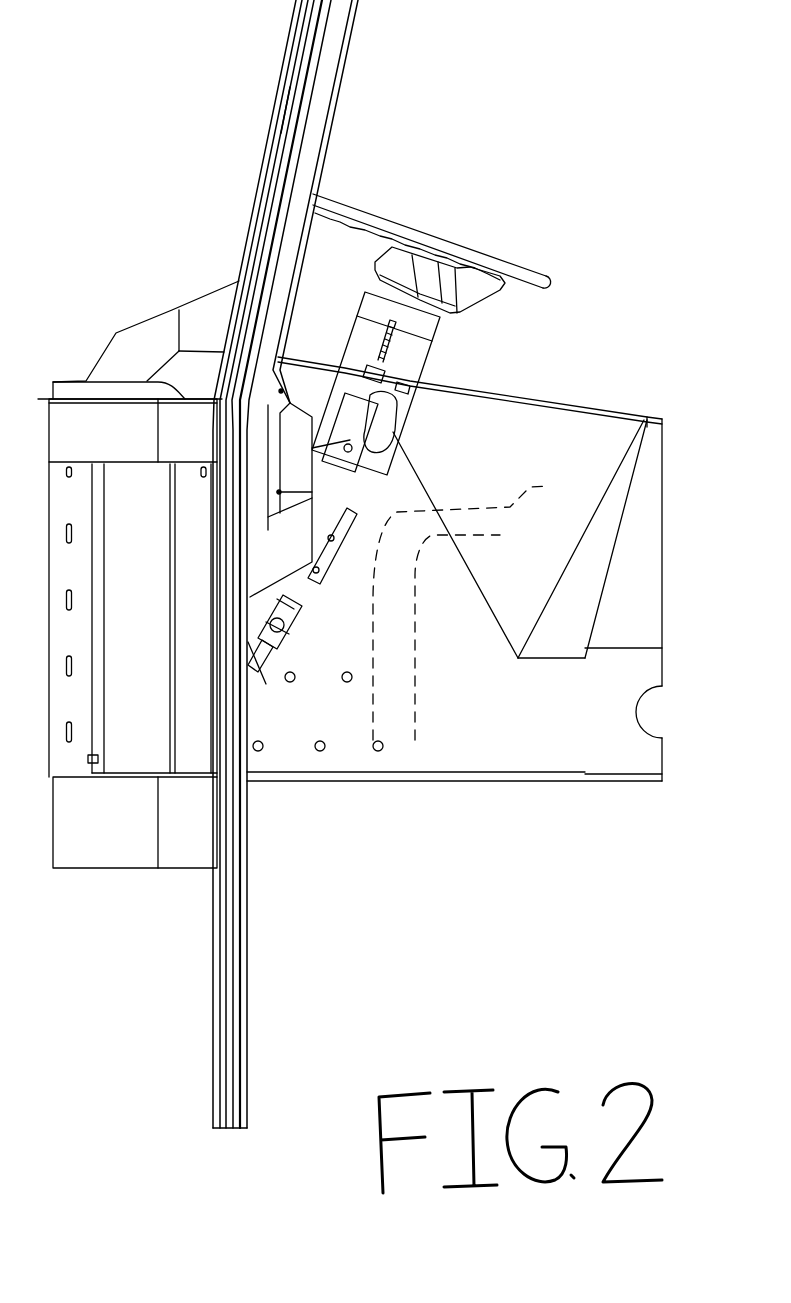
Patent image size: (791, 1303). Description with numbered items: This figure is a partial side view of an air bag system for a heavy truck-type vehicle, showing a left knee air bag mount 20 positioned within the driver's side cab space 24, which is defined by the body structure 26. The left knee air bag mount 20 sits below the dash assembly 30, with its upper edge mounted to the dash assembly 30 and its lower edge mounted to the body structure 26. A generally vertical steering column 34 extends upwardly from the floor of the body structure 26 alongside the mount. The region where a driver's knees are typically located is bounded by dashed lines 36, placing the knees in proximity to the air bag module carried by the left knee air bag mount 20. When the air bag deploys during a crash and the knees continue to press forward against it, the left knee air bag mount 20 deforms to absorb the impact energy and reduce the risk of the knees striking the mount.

The left knee air bag mount 20 is at (269, 565).
The driver's side cab space 24 is at (555, 450).
The body structure 26 is at (513, 392).
The dash assembly 30 is at (281, 390).
The steering column 34 is at (493, 261).
The dashed lines 36 is at (423, 693).